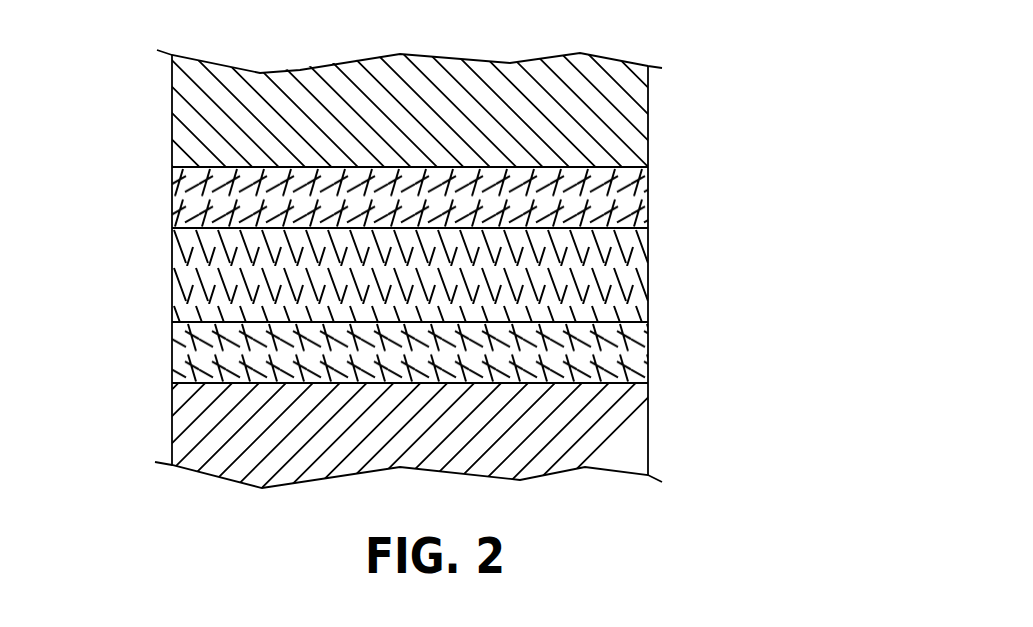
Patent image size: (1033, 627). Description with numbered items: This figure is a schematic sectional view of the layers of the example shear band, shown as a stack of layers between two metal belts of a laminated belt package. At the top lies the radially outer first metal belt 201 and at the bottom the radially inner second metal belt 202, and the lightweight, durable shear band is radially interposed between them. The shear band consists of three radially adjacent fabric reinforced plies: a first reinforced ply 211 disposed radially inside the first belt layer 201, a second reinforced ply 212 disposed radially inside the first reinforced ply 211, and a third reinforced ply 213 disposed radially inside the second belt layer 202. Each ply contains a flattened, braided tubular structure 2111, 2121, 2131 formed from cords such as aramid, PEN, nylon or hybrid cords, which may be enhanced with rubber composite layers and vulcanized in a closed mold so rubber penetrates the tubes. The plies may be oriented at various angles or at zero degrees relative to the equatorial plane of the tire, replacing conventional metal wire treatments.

The first metal belt 201 is at (652, 438).
The second metal belt 202 is at (652, 96).
The first reinforced ply 211 is at (652, 355).
The second reinforced ply 212 is at (652, 284).
The third reinforced ply 213 is at (652, 202).
The flattened tubular structure 2111 is at (196, 203).
The flattened tubular structure 2121 is at (200, 282).
The flattened tubular structure 2131 is at (196, 370).